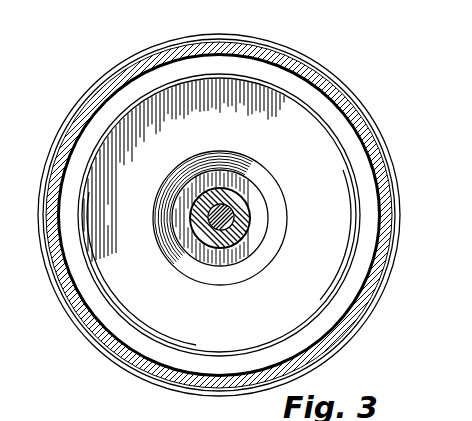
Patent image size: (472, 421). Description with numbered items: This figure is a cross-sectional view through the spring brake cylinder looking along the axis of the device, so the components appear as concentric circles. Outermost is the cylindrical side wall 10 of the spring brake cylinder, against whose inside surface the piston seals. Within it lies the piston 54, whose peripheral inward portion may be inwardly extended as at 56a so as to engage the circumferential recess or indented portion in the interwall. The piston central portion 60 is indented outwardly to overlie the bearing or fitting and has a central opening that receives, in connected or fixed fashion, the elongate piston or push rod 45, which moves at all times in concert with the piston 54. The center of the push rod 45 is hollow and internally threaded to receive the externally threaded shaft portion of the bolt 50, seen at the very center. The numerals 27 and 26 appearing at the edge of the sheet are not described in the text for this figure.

The cylindrical side wall 10 is at (284, 58).
The piston 54 is at (154, 260).
The inwardly extended peripheral portion 56a is at (302, 95).
The piston central portion 60 is at (190, 247).
The push rod 45 is at (233, 250).
The bolt 50 is at (230, 221).
The element 27 is at (33, 402).
The element 26 is at (67, 405).